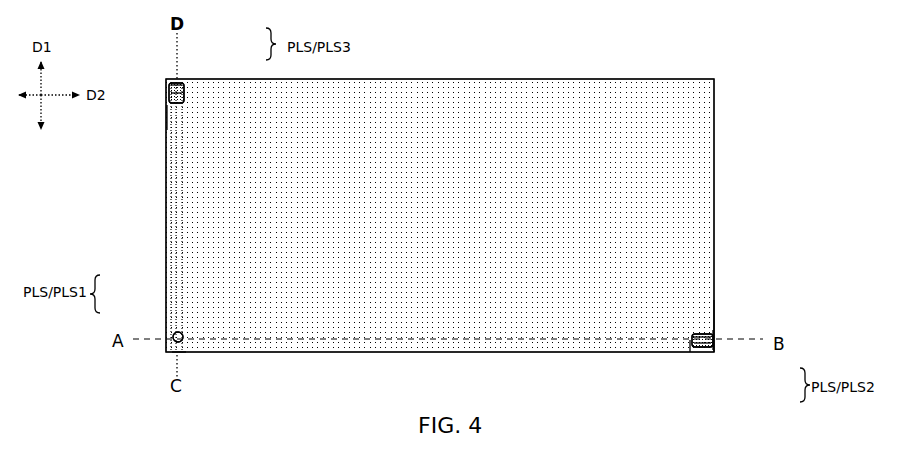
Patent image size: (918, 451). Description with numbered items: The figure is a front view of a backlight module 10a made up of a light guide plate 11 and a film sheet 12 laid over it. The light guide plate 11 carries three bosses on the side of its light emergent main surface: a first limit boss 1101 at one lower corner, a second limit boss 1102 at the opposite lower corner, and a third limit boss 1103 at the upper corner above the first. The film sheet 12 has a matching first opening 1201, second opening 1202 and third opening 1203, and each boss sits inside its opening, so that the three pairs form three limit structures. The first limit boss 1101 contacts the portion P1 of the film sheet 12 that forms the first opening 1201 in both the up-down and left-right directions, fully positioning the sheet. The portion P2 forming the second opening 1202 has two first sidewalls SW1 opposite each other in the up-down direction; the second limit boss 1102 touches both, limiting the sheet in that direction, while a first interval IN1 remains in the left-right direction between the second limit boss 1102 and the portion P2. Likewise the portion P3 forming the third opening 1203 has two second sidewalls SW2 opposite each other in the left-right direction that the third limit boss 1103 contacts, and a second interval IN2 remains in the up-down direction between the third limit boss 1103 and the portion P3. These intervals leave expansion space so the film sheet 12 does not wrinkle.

The backlight module 10a is at (573, 52).
The light guide plate 11 is at (714, 338).
The film sheet 12 is at (713, 335).
The first limit boss 1101 is at (177, 340).
The second limit boss 1102 is at (701, 350).
The third limit boss 1103 is at (216, 76).
The first opening 1201 is at (178, 333).
The second opening 1202 is at (712, 347).
The third opening 1203 is at (181, 80).
The portion of the film sheet that forms the first opening P1 is at (187, 352).
The portion of the film sheet that forms the second opening P2 is at (695, 335).
The portion of the film sheet that forms the third opening P3 is at (170, 79).
The first sidewall SW1 is at (701, 336).
The second sidewall SW2 is at (169, 82).
The first interval IN1 is at (660, 369).
The second interval IN2 is at (138, 130).